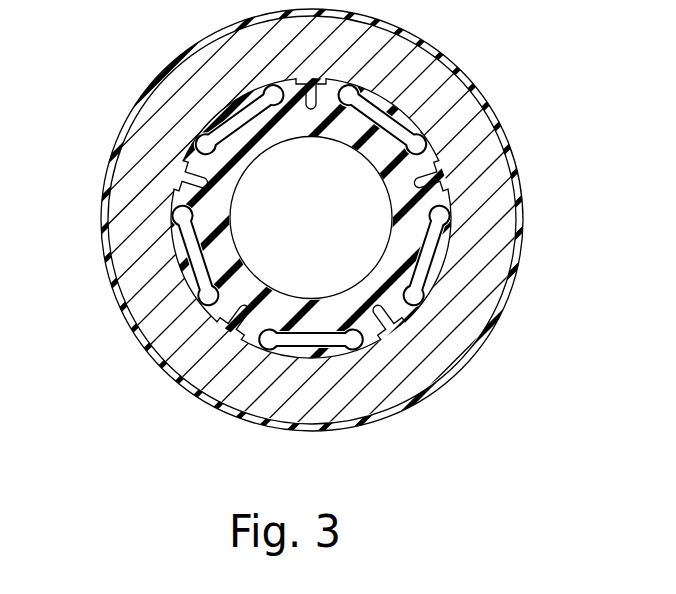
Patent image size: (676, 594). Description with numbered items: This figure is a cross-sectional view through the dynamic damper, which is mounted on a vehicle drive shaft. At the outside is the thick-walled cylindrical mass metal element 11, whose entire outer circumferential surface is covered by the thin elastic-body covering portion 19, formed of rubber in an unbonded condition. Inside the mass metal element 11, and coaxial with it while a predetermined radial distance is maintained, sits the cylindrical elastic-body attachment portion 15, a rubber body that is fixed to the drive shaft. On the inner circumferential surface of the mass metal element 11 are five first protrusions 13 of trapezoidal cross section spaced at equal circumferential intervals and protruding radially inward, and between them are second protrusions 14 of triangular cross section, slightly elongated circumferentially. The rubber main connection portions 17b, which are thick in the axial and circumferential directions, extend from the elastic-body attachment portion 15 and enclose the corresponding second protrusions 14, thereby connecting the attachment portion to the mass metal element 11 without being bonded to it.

The mass metal element 11 is at (474, 134).
The first protrusions 13 is at (178, 243).
The second protrusions 14 is at (200, 172).
The elastic-body attachment portion 15 is at (316, 318).
The main connection portions 17b is at (228, 308).
The elastic-body covering portion 19 is at (438, 46).